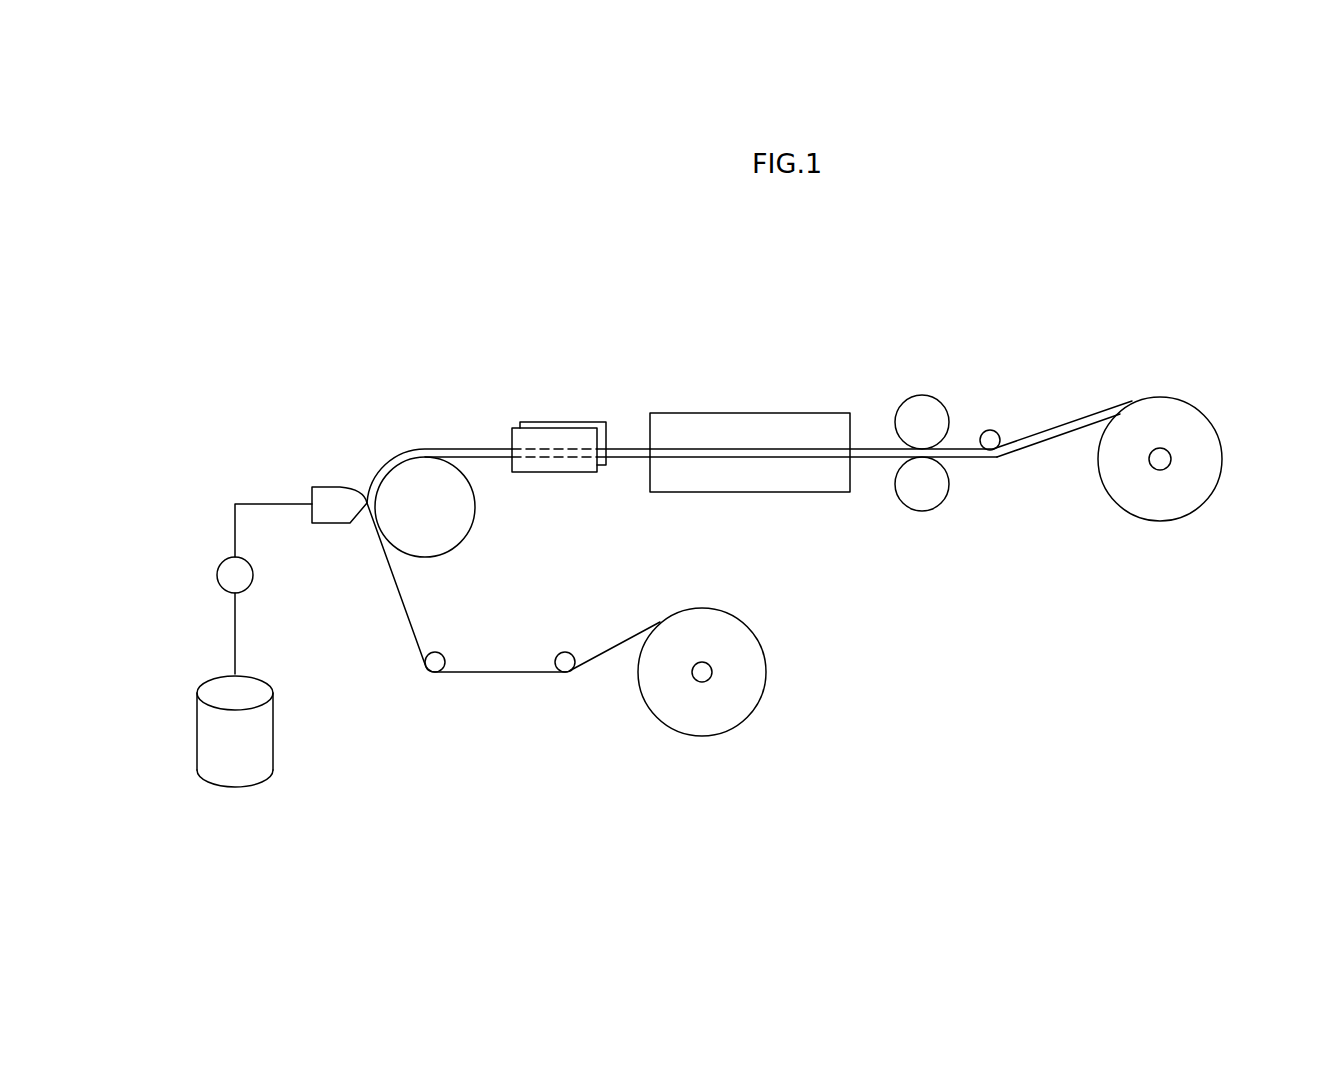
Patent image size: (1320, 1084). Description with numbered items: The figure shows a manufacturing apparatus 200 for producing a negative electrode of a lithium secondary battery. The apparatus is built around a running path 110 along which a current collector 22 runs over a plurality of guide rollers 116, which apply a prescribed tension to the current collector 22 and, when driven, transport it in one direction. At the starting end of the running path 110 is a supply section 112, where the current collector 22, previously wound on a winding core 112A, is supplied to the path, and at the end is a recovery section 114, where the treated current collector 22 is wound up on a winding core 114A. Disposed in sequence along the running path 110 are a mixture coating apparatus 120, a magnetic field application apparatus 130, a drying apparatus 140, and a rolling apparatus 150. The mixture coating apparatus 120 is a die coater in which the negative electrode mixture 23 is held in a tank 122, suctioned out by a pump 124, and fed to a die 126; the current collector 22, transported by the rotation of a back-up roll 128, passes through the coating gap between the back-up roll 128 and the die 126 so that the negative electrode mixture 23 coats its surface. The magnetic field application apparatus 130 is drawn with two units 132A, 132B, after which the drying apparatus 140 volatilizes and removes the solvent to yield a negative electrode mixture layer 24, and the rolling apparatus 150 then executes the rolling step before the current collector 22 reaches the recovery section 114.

The manufacturing apparatus 200 is at (298, 287).
The running path 110 is at (423, 687).
The supply section 112 is at (675, 742).
The winding core 112A is at (708, 680).
The recovery section 114 is at (1142, 388).
The winding core 114A is at (1165, 469).
The guide rollers 116 is at (440, 655).
The mixture coating apparatus 120 is at (232, 480).
The tank 122 is at (197, 733).
The pump 124 is at (218, 581).
The die 126 is at (332, 486).
The back-up roll 128 is at (478, 520).
The magnetic field application apparatus 130 is at (523, 387).
The first measuring unit 132A is at (547, 427).
The second measuring unit 132B is at (592, 421).
The drying apparatus 140 is at (804, 349).
The rolling apparatus 150 is at (930, 380).
The current collector 22 is at (395, 590).
The negative electrode mixture 23 is at (440, 448).
The negative electrode mixture layer 24 is at (860, 445).